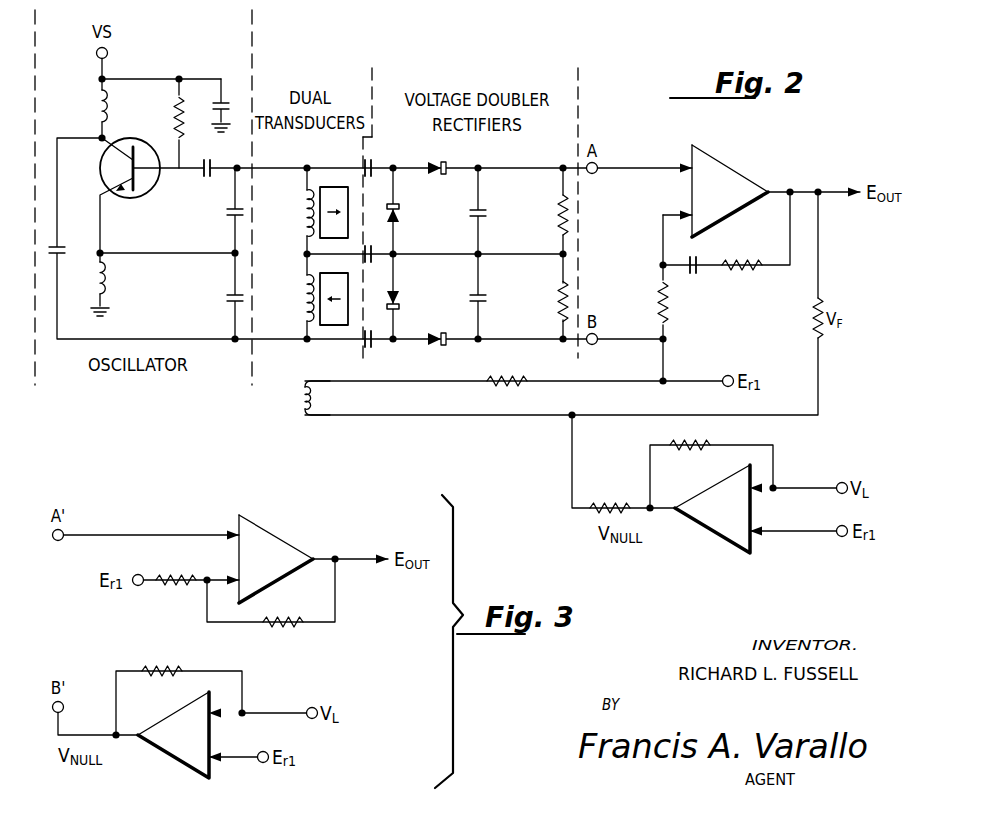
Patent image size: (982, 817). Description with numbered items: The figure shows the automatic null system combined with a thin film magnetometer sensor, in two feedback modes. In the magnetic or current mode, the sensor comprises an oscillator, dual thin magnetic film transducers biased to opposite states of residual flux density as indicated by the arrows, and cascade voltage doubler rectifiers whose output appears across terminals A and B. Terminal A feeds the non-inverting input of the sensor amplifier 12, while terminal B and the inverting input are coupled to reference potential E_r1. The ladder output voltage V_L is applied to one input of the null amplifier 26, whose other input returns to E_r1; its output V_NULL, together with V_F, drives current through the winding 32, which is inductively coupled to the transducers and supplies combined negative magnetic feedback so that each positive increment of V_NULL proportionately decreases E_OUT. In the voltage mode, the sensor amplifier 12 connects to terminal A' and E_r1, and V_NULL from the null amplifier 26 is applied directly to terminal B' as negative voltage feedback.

In FIG. 2, the sensor amplifier 12 is at (736, 175).
In FIG. 3, the sensor amplifier 12 is at (288, 556).
In FIG. 2, the null amplifier 26 is at (708, 528).
In FIG. 3, the null amplifier 26 is at (165, 752).
In FIG. 2, the winding 32 is at (300, 396).